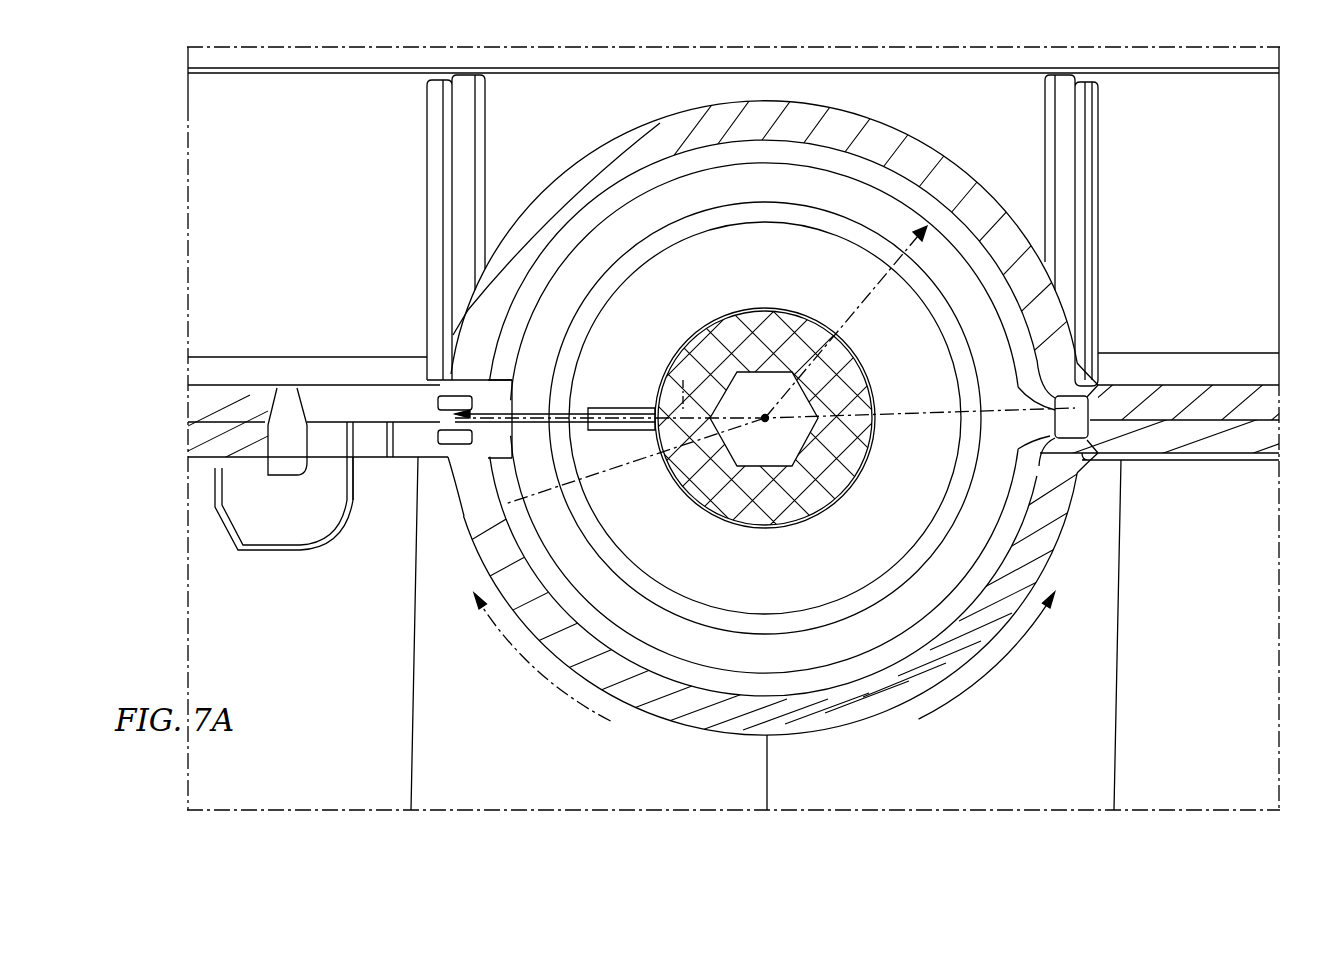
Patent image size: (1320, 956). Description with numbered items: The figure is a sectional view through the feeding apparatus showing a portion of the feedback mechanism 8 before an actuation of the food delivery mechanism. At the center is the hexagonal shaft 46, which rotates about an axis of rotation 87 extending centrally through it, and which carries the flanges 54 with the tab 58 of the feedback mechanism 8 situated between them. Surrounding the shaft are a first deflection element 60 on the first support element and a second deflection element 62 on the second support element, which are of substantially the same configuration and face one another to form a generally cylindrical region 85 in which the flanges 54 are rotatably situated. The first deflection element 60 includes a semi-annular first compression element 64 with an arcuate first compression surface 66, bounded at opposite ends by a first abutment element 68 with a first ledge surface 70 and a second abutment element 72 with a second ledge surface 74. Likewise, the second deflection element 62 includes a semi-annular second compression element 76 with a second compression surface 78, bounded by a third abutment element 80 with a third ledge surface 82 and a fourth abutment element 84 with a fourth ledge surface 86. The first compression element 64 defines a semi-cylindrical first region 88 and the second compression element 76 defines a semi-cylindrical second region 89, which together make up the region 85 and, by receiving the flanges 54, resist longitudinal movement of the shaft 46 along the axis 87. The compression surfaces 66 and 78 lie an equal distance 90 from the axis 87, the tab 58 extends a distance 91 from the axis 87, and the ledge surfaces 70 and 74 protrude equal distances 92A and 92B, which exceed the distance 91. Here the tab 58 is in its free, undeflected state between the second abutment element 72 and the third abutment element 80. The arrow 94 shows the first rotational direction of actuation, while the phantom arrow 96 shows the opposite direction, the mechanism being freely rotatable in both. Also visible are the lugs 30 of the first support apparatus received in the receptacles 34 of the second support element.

The feedback mechanism 8 is at (514, 398).
The lugs 30 is at (230, 550).
The receptacles 34 is at (386, 437).
The shaft 46 is at (766, 372).
The flanges 54 is at (672, 222).
The tab 58 is at (605, 409).
The first deflection element 60 is at (519, 298).
The second deflection element 62 is at (522, 556).
The first compression element 64 is at (537, 257).
The first compression surface 66 is at (576, 214).
The first abutment element 68 is at (1094, 407).
The first ledge surface 70 is at (1046, 390).
The second abutment element 72 is at (440, 400).
The second ledge surface 74 is at (403, 392).
The second compression element 76 is at (535, 590).
The second compression surface 78 is at (575, 622).
The third abutment element 80 is at (430, 440).
The third ledge surface 82 is at (446, 435).
The fourth abutment element 84 is at (1040, 432).
The cylindrical region 85 is at (872, 208).
The fourth ledge surface 86 is at (1087, 407).
The axis of rotation 87 is at (767, 422).
The first region 88 is at (812, 190).
The second region 89 is at (847, 636).
The distance 90 is at (862, 296).
The distance 91 is at (680, 375).
The distance 92A is at (907, 363).
The distance 92B is at (613, 448).
The first rotational direction 94 is at (1002, 652).
The second rotational direction 96 is at (518, 652).